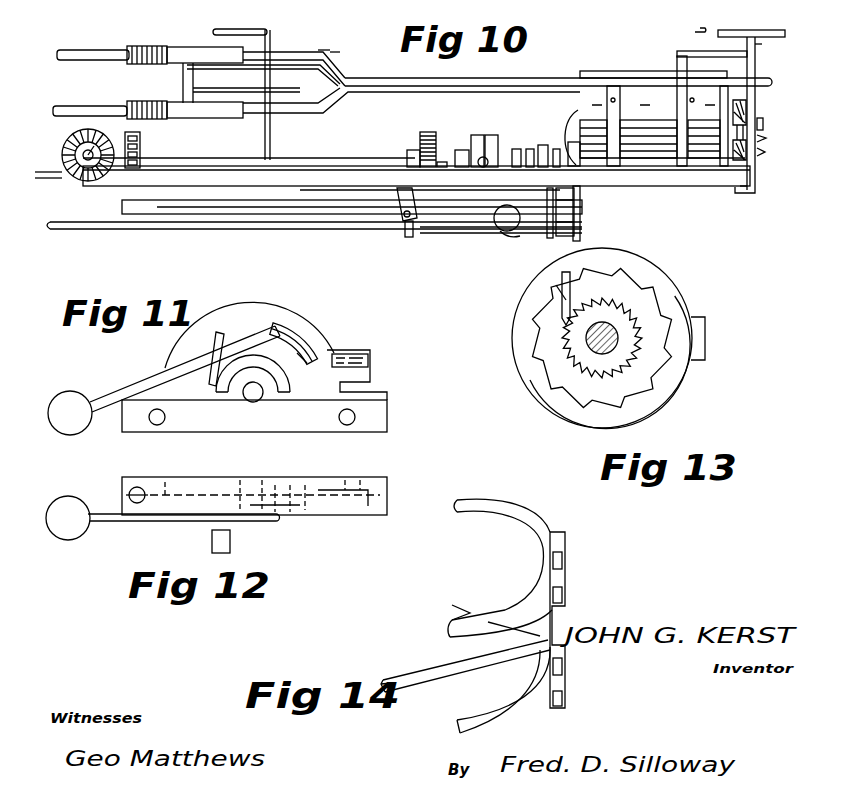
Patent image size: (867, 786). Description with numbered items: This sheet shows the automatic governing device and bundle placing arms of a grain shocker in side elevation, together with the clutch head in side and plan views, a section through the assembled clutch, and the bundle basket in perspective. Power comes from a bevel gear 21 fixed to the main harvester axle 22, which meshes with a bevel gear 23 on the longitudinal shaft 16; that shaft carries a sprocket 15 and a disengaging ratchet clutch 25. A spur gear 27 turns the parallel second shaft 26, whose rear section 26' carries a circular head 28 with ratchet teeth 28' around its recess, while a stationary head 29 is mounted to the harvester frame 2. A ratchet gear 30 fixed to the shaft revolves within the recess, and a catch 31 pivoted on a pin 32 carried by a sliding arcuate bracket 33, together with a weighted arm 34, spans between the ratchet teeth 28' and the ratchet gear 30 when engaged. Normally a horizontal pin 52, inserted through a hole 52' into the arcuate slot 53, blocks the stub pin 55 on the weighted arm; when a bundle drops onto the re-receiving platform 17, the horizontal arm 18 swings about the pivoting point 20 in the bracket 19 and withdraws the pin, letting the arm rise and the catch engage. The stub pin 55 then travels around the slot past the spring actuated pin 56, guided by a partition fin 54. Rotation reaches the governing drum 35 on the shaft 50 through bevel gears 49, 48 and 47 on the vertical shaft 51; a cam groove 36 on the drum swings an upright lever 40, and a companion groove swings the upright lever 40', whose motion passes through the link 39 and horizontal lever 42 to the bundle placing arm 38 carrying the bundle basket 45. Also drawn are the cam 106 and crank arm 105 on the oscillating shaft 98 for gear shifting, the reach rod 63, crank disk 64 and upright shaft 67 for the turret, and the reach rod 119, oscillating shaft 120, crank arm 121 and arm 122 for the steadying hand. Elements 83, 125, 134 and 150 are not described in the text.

In FIG. 10, the harvester frame 2 is at (360, 178).
In FIG. 10, the sprocket 15 is at (142, 140).
In FIG. 10, the shaft 16 is at (352, 158).
In FIG. 10, the bundle re-receiving platform 17 is at (255, 207).
In FIG. 10, the horizontal arm 18 is at (376, 222).
In FIG. 10, the bracket 19 is at (398, 200).
In FIG. 10, the pivoting point 20 is at (409, 237).
In FIG. 10, the bevel gear 21 is at (60, 178).
In FIG. 10, the main harvester axle 22 is at (68, 136).
In FIG. 10, the bevel gear 23 is at (104, 142).
In FIG. 10, the disengaging ratchet clutch 25 is at (518, 149).
In FIG. 10, the second shaft 26 is at (751, 196).
In FIG. 13, the rear section of shaft 26' is at (577, 368).
In FIG. 10, the spur gear 27 is at (430, 132).
In FIG. 10, the circular head 28 is at (491, 129).
In FIG. 13, the circular head 28 is at (611, 338).
In FIG. 13, the ratchet teeth 28' is at (602, 314).
In FIG. 10, the stationary head 29 is at (478, 135).
In FIG. 11, the stationary head 29 is at (311, 333).
In FIG. 12, the stationary head 29 is at (228, 480).
In FIG. 13, the ratchet gear 30 is at (613, 365).
In FIG. 11, the catch 31 is at (220, 332).
In FIG. 12, the catch 31 is at (232, 540).
In FIG. 13, the catch 31 is at (560, 280).
In FIG. 11, the pin 32 is at (185, 356).
In FIG. 13, the pin 32 is at (562, 300).
In FIG. 11, the sliding arcuate bracket 33 is at (253, 378).
In FIG. 11, the weighted arm 34 is at (108, 398).
In FIG. 12, the weighted arm 34 is at (140, 521).
In FIG. 10, the governing drum 35 is at (653, 100).
In FIG. 10, the cam groove 36 is at (620, 72).
In FIG. 10, the bundle placing arm 38 is at (514, 86).
In FIG. 14, the bundle placing arm 38 is at (442, 667).
In FIG. 10, the link 39 is at (718, 52).
In FIG. 10, the upright lever 40 is at (662, 128).
In FIG. 10, the upright lever 40' is at (678, 90).
In FIG. 10, the pivoted horizontal lever 42 is at (758, 62).
In FIG. 10, the bundle basket 45 is at (162, 62).
In FIG. 14, the bundle basket 45 is at (553, 617).
In FIG. 10, the bevel gear 47 is at (764, 153).
In FIG. 10, the bevel gear 48 is at (763, 124).
In FIG. 10, the bevel gear 49 is at (748, 112).
In FIG. 10, the shaft 50 is at (737, 105).
In FIG. 10, the vertical shaft 51 is at (766, 138).
In FIG. 10, the horizontal pin 52 is at (461, 143).
In FIG. 11, the hole 52' is at (294, 327).
In FIG. 11, the arcuate slot 53 is at (300, 330).
In FIG. 11, the partition fin 54 is at (305, 355).
In FIG. 12, the stub pin 55 is at (278, 505).
In FIG. 11, the spring actuated pin 56 is at (323, 360).
In FIG. 10, the reach rod 63 is at (700, 30).
In FIG. 10, the horizontal crank disk 64 is at (759, 24).
In FIG. 10, the upright shaft 67 is at (762, 46).
In FIG. 10, the bend 83 is at (336, 52).
In FIG. 10, the oscillating longitudinal shaft 98 is at (484, 228).
In FIG. 10, the crank arm 105 is at (512, 236).
In FIG. 10, the cam 106 is at (552, 136).
In FIG. 10, the actuating reach rod 119 is at (265, 32).
In FIG. 10, the longitudinal oscillating shaft 120 is at (478, 212).
In FIG. 10, the vertical crank arm 121 is at (325, 50).
In FIG. 10, the arm 122 is at (580, 206).
In FIG. 10, the curved arm 125 is at (574, 120).
In FIG. 10, the support 134 is at (48, 166).
In FIG. 10, the link 150 is at (514, 240).